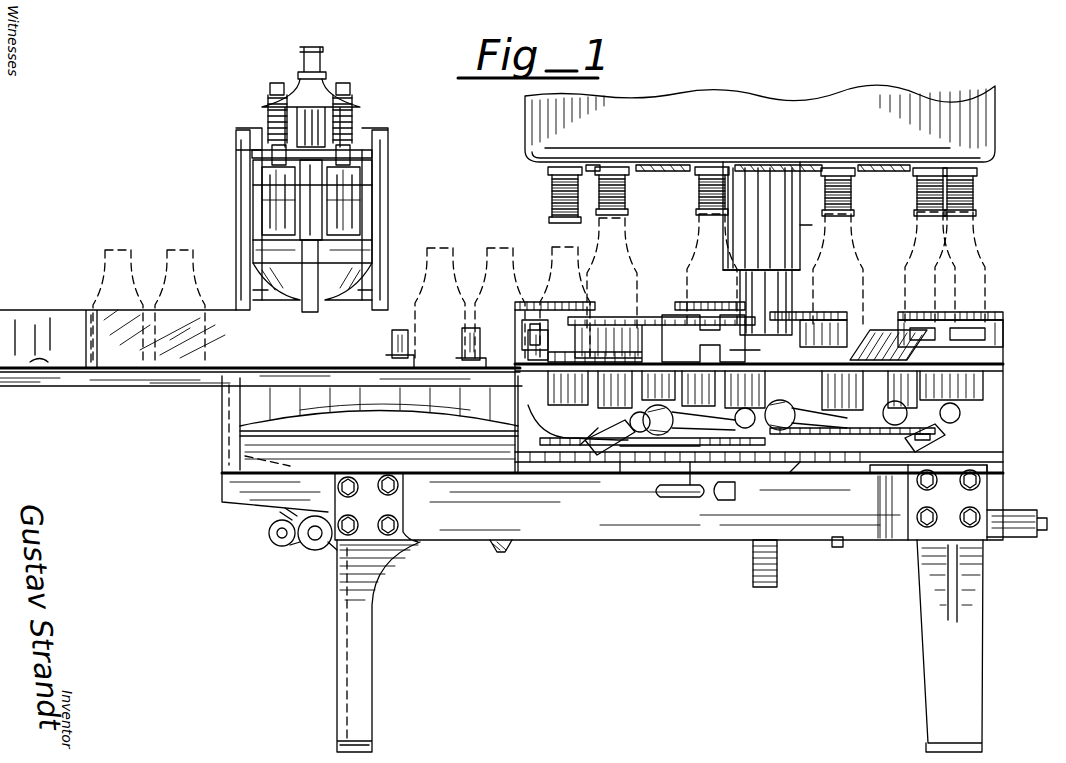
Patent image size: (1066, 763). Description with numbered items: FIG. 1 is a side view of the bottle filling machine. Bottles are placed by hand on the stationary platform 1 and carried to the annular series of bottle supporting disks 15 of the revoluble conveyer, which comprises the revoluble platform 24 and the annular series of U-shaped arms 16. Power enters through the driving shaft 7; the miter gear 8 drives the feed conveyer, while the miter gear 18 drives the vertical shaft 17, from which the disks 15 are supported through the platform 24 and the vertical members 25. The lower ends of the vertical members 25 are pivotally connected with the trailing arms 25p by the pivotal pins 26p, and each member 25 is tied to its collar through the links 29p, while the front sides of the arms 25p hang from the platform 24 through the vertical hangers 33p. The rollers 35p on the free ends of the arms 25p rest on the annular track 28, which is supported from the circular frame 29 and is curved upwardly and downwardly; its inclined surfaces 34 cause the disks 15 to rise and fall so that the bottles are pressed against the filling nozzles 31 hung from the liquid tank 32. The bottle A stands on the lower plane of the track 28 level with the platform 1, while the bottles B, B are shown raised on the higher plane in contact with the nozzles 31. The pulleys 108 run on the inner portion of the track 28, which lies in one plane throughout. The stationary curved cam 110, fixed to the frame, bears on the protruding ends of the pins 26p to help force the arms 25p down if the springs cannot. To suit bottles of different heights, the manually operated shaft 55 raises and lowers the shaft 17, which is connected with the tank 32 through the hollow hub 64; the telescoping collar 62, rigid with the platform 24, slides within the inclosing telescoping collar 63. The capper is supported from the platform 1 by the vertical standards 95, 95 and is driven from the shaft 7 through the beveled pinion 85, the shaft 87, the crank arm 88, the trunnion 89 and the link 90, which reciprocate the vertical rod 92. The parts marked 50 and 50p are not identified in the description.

The stationary platform 1 is at (38, 368).
The driving shaft 7 is at (1030, 537).
The miter gear 8 is at (498, 553).
The bottle supporting disks 15 is at (642, 325).
The U-shaped arms 16 is at (680, 302).
The vertical shaft 17 is at (753, 565).
The miter gear 18 is at (839, 547).
The revoluble platform 24 is at (900, 300).
The vertical members 25 is at (735, 350).
The trailing arms 25p is at (585, 462).
The pivotal pins 26p is at (960, 430).
The annular track 28 is at (922, 450).
The circular frame 29 is at (798, 472).
The links 29p is at (748, 405).
The filling nozzles 31 is at (548, 216).
The liquid tank 32 is at (760, 128).
The vertical hangers 33p is at (738, 428).
The inclined surfaces of track 34 is at (625, 472).
The rollers 35p is at (700, 446).
The pin 50 is at (410, 340).
The bottle 50p is at (405, 328).
The manually operated shaft 55 is at (680, 497).
The telescoping collar 62 is at (790, 290).
The inclosing telescoping collar 63 is at (800, 240).
The hollow hub 64 is at (768, 190).
The beveled pinion 85 is at (330, 550).
The shaft 87 is at (315, 526).
The crank arm 88 is at (296, 547).
The trunnion 89 is at (278, 545).
The link 90 is at (278, 518).
The vertically reciprocating rod 92 is at (320, 68).
The vertical standards 95 is at (236, 238).
The pulleys 108 is at (742, 372).
The stationary curved cam 110 is at (560, 462).
The bottle A is at (565, 303).
The bottles B is at (786, 271).